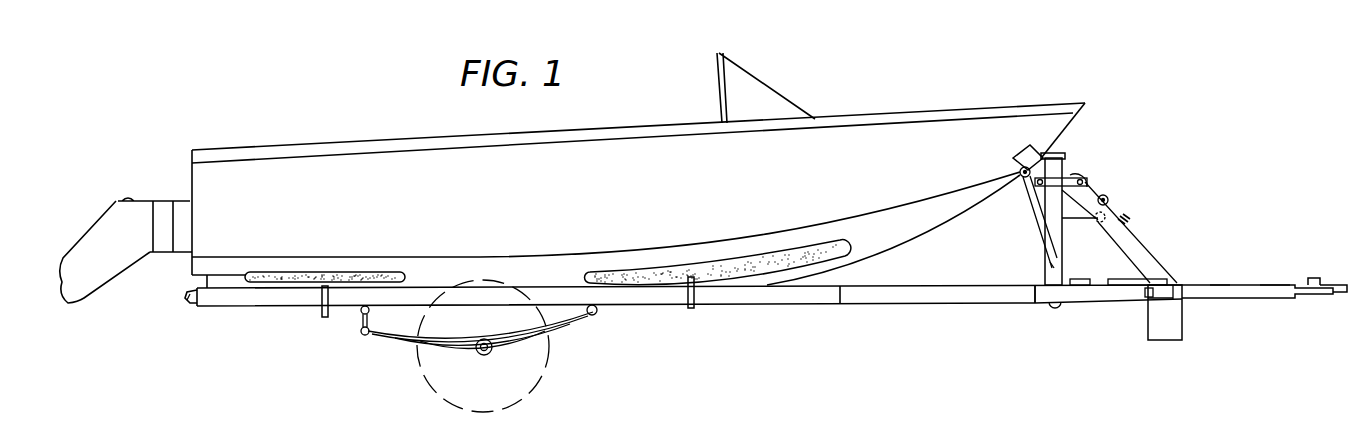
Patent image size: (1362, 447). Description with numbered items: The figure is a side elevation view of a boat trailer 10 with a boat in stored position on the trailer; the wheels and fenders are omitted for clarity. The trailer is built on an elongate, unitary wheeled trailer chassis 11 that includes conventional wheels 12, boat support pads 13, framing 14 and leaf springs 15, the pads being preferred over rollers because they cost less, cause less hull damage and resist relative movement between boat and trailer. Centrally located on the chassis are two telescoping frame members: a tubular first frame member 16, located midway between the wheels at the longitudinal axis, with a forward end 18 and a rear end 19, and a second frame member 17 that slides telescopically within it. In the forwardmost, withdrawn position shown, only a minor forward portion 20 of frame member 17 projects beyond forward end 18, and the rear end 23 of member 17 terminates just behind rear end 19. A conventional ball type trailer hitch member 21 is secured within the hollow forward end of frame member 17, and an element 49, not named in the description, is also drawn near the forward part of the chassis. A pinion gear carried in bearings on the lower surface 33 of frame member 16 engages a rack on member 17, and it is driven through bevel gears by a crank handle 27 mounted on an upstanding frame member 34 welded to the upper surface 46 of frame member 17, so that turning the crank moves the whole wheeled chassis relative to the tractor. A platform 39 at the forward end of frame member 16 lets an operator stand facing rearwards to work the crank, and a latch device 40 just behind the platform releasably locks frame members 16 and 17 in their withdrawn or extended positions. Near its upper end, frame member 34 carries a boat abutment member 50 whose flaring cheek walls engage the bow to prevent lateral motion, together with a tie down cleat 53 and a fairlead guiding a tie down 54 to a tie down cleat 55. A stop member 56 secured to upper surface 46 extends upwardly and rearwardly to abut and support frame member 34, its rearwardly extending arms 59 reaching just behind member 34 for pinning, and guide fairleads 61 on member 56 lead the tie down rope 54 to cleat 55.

The boat trailer 10 is at (766, 313).
The wheeled trailer chassis 11 is at (678, 311).
The wheels 12 is at (492, 396).
The boat support pads 13 is at (270, 283).
The framing 14 is at (302, 303).
The leaf springs 15 is at (422, 343).
The first elongate frame member 16 is at (1037, 307).
The second elongate frame member 17 is at (1253, 299).
The forward end 18 is at (1146, 299).
The rear end 19 is at (194, 307).
The forward portion 20 is at (1270, 284).
The trailer hitch member 21 is at (1330, 294).
The rear end 23 is at (185, 295).
The crank handle 27 is at (1103, 223).
The lower surface 33 is at (1068, 306).
The upstanding frame member 34 is at (1046, 229).
The platform 39 is at (1155, 264).
The latch device 40 is at (1077, 271).
The upper surface 46 is at (1218, 284).
The jack 49 is at (1165, 341).
The boat abutment member 50 is at (1021, 141).
The tie down cleat 53 is at (1050, 266).
The tie down 54 is at (1033, 203).
The tie down cleat 55 is at (1129, 216).
The stop member 56 is at (1137, 250).
The rearwardly extending arms 59 is at (1076, 176).
The guide fairleads 61 is at (1107, 195).